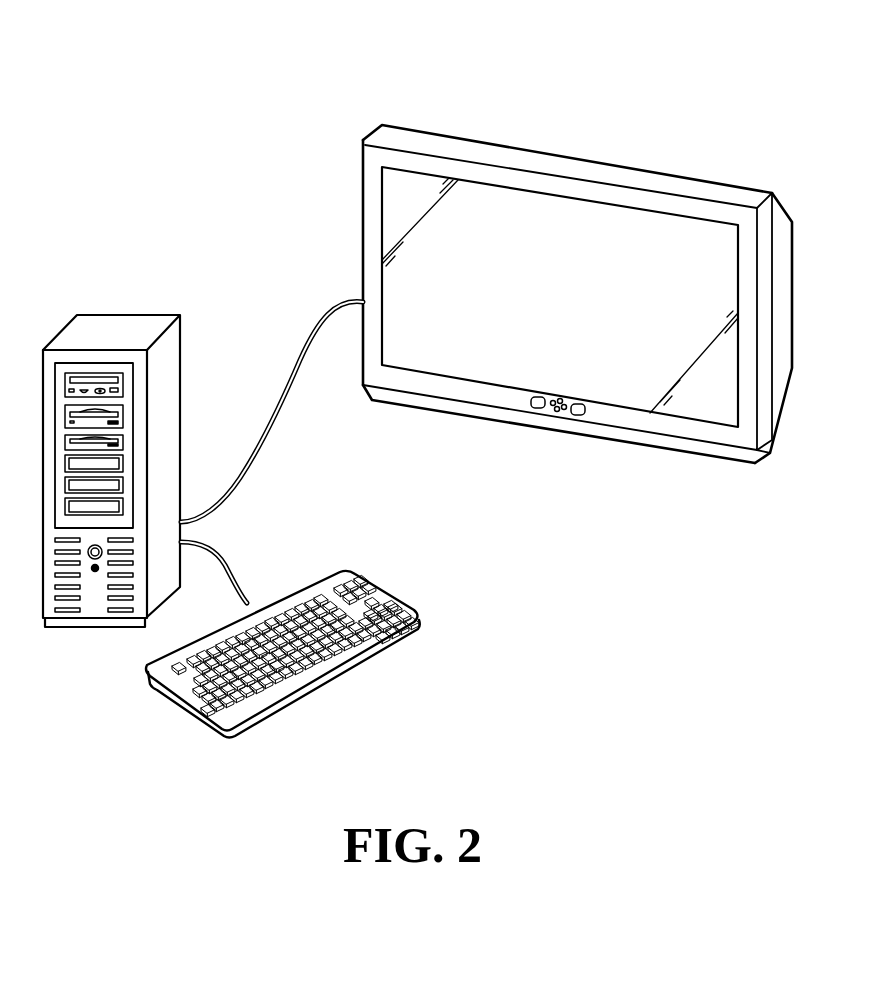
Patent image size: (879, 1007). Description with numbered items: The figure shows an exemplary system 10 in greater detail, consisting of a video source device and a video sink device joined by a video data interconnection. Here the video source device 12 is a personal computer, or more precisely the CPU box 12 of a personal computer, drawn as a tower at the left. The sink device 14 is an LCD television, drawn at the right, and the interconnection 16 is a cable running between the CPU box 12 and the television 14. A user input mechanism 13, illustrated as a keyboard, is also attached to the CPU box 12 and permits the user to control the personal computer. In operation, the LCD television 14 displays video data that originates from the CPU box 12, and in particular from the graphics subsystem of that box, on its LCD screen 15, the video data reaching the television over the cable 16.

The system 10 is at (205, 88).
The video source device 12 is at (108, 328).
The user input mechanism 13 is at (334, 586).
The video sink device 14 is at (592, 190).
The LCD screen 15 is at (506, 207).
The video data interconnection 16 is at (274, 403).